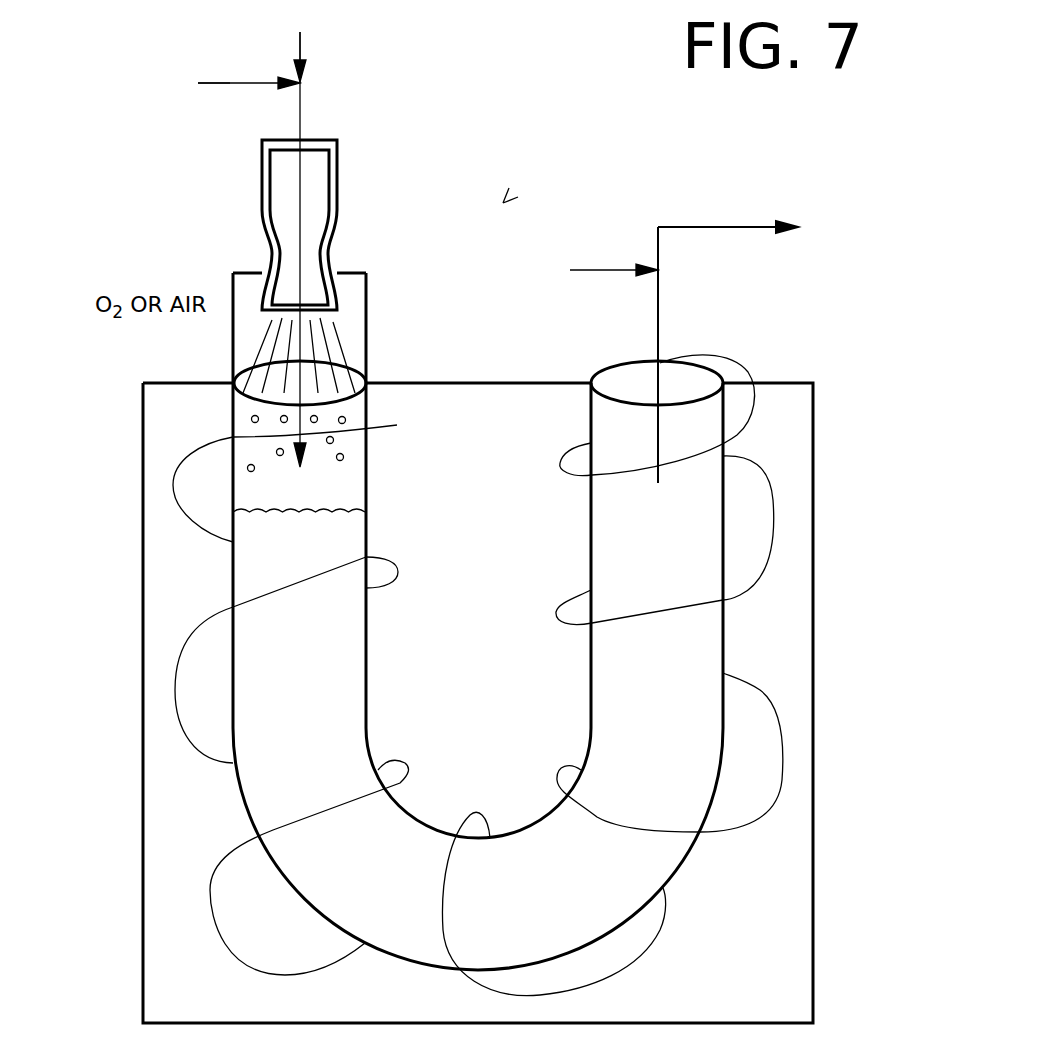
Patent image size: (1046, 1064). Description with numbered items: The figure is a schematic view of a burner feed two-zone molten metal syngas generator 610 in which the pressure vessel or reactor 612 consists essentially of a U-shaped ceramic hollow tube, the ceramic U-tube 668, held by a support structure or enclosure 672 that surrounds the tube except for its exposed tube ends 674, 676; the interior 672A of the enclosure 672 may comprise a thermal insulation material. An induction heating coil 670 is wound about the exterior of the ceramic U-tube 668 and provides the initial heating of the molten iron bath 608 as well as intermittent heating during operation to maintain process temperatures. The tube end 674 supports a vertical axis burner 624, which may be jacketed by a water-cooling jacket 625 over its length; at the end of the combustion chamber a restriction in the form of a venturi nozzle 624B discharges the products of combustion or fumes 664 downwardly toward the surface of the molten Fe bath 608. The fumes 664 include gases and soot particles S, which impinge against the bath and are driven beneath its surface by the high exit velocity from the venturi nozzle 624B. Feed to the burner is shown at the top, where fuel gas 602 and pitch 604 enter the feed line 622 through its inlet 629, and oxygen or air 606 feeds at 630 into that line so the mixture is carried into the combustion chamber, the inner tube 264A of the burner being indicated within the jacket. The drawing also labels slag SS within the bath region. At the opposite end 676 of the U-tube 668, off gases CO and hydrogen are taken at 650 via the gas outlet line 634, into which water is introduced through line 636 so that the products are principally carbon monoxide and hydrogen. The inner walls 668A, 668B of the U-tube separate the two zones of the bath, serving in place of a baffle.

The fuel gas 602 is at (319, 34).
The pitch 604 is at (378, 24).
The oxygen or air 606 is at (136, 85).
The molten Fe bath 608 is at (299, 511).
The burner feed two-zone molten metal syngas generator 610 is at (548, 160).
The pressure vessel or reactor 612 is at (738, 677).
The feed conduit 622 is at (336, 237).
The vertical axis burner 624 is at (337, 205).
The venturi nozzle 624B is at (307, 272).
The jacket 625 is at (265, 180).
The fuel feed inlet 629 is at (303, 50).
The oxygen feed point 630 is at (249, 73).
The gas outlet line 634 is at (658, 293).
The water line 636 is at (614, 259).
The off gas take-off 650 is at (658, 378).
The products of combustion or fumes 664 is at (328, 333).
The ceramic U-tube 668 is at (677, 795).
The inner wall of U-tube 668A is at (337, 655).
The inner wall of U-tube 668B is at (610, 567).
The induction heating coil 670 is at (222, 872).
The support structure or enclosure 672 is at (813, 732).
The interior of enclosure 672A is at (740, 941).
The tube end 674 is at (350, 410).
The opposite tube end 676 is at (692, 420).
The burner inner tube 264A is at (317, 165).
The soot particles S is at (334, 442).
The slag SS is at (260, 653).